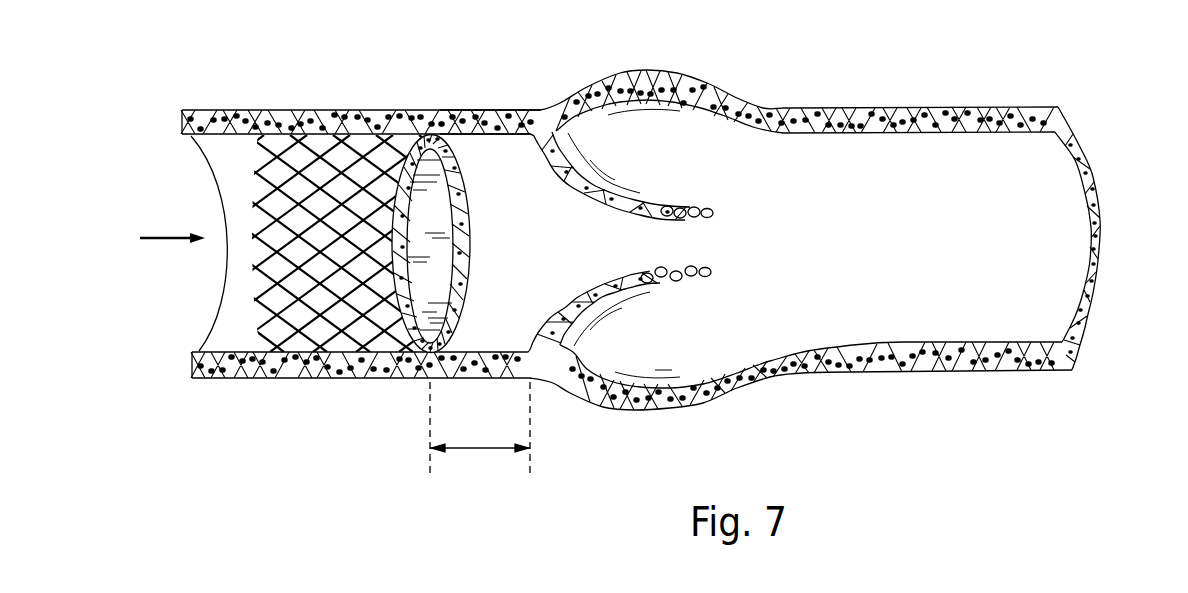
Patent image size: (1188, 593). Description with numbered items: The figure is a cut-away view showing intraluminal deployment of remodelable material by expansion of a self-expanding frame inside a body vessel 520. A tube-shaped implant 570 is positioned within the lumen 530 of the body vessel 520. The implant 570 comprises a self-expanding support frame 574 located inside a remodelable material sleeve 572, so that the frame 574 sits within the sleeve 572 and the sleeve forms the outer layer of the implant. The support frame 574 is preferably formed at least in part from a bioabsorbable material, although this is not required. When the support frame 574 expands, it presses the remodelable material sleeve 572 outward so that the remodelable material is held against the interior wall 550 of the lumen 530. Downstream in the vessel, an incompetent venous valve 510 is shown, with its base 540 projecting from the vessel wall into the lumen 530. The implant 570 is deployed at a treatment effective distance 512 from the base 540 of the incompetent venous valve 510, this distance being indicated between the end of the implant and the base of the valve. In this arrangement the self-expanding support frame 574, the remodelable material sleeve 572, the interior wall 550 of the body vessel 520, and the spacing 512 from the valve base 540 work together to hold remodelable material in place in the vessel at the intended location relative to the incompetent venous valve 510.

The incompetent venous valve 510 is at (298, 410).
The treatment effective distance 512 is at (476, 449).
The body vessel 520 is at (248, 110).
The lumen 530 is at (1057, 280).
The base of incompetent venous valve 540 is at (547, 108).
The interior wall 550 is at (483, 110).
The tube-shaped implant 570 is at (295, 243).
The remodelable material sleeve 572 is at (292, 228).
The self-expanding support frame 574 is at (298, 185).